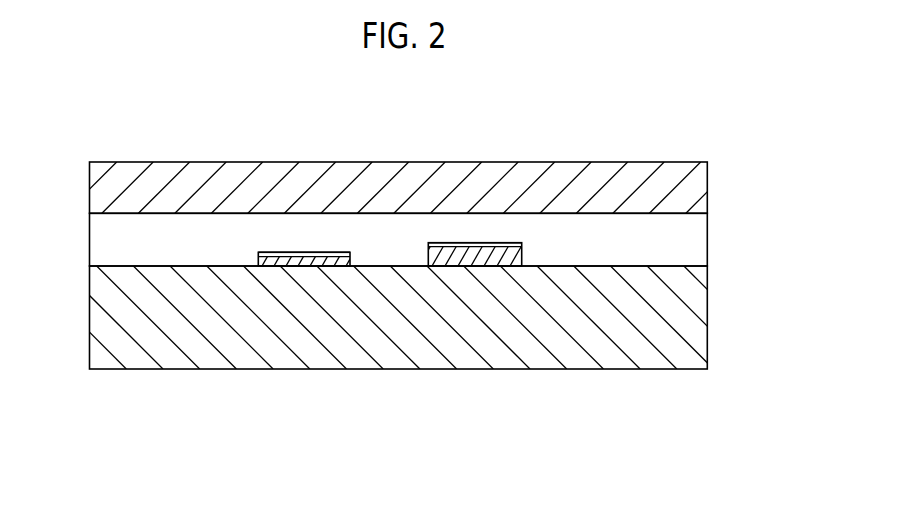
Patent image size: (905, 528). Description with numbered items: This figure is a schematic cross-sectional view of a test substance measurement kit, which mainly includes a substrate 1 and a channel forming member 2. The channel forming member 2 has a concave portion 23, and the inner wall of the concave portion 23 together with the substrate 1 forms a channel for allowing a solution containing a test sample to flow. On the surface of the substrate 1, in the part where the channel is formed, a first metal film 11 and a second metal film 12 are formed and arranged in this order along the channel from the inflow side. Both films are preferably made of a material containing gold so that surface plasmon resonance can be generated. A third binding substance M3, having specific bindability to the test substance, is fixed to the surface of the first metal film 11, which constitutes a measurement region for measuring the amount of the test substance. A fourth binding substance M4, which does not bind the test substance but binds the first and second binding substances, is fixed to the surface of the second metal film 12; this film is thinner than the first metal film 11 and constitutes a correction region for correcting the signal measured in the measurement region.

The substrate 1 is at (702, 330).
The channel forming member 2 is at (703, 189).
The concave portion 23 is at (702, 244).
The first metal film 11 is at (493, 262).
The second metal film 12 is at (322, 262).
The third binding substance M3 is at (463, 243).
The fourth binding substance M4 is at (319, 255).